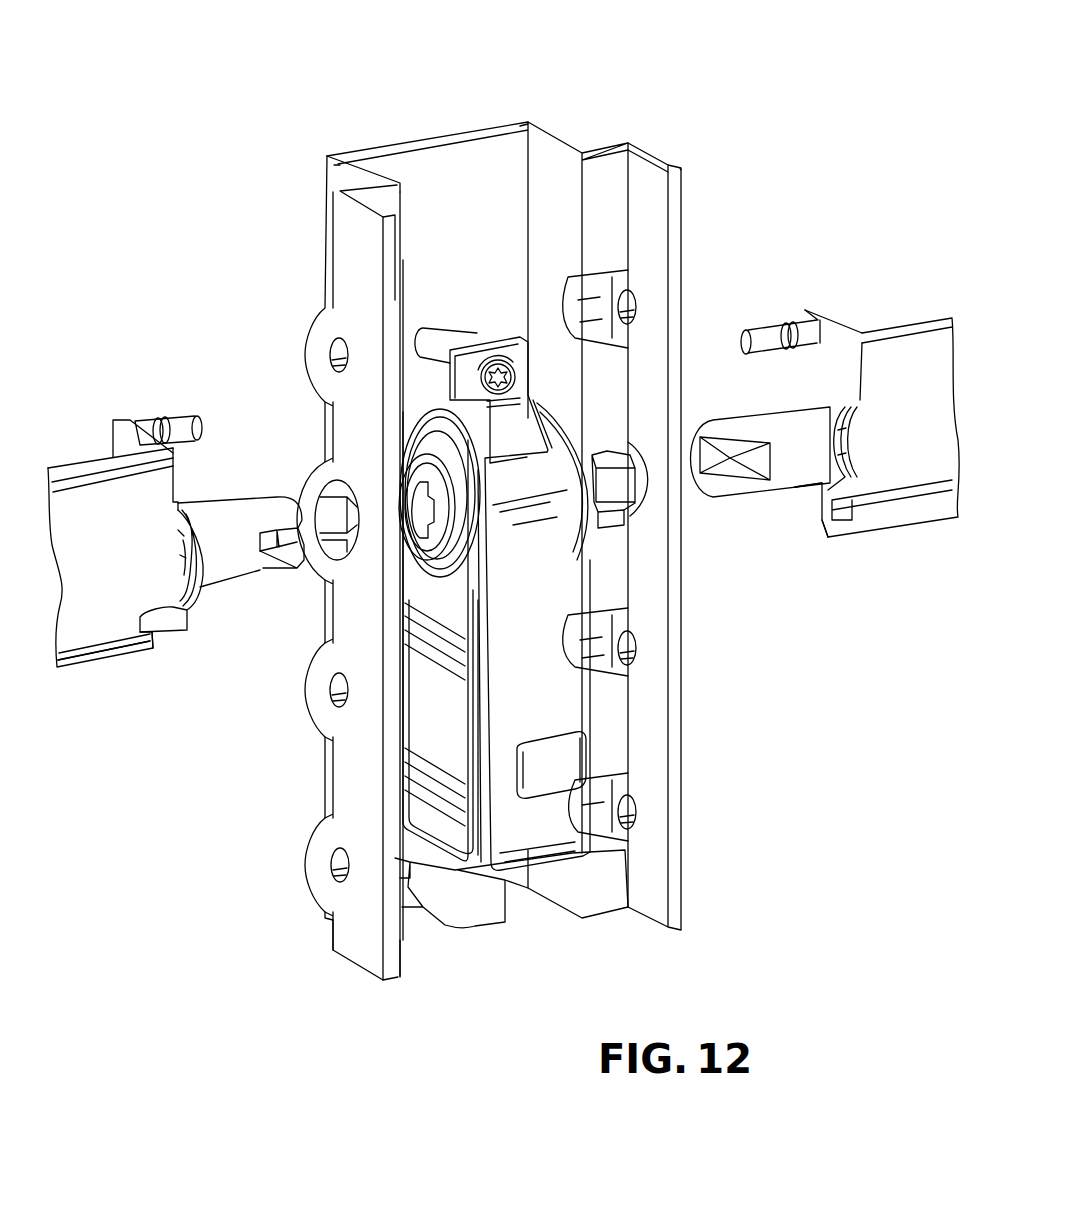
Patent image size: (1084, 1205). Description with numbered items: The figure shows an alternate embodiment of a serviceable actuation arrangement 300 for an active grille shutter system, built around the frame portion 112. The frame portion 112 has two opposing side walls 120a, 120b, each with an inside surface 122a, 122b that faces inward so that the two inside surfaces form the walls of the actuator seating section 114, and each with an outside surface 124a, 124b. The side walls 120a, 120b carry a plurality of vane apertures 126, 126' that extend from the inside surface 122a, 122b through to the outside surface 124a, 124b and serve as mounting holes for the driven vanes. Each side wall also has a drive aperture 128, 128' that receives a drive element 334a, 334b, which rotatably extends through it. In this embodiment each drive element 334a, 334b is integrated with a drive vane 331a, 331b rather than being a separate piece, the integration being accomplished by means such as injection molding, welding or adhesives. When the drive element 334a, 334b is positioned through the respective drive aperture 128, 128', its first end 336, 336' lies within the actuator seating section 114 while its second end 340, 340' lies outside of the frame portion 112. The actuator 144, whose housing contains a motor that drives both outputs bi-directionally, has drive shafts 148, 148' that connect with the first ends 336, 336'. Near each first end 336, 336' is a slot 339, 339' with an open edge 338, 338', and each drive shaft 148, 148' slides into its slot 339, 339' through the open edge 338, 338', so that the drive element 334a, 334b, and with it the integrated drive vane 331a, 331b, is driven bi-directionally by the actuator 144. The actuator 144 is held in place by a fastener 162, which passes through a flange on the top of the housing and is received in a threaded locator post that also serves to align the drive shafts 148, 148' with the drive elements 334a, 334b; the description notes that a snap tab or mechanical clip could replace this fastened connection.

The serviceable actuation arrangement 300 is at (303, 82).
The frame portion 112 is at (487, 152).
The actuator seating section 114 is at (334, 300).
The side wall 120a is at (347, 188).
The side wall 120b is at (642, 148).
The inside surface 122a is at (423, 385).
The inside surface 122b is at (645, 178).
The outside surface 124a is at (342, 428).
The outside surface 124b is at (684, 218).
The vane aperture 126 is at (299, 585).
The vane aperture 126' is at (656, 531).
The drive aperture 128 is at (312, 493).
The drive aperture 128' is at (680, 431).
The actuator 144 is at (550, 722).
The drive shaft 148 is at (472, 509).
The drive shaft 148' is at (677, 567).
The fastener 162 is at (512, 362).
The drive vane 331a is at (110, 524).
The drive vane 331b is at (883, 377).
The drive element 334a is at (208, 614).
The drive element 334b is at (803, 518).
The first end 336 is at (241, 590).
The first end 336' is at (761, 504).
The open edge 338 is at (191, 439).
The open edge 338' is at (770, 363).
The slot 339 is at (258, 589).
The slot 339' is at (749, 500).
The second end 340 is at (187, 543).
The second end 340' is at (811, 424).